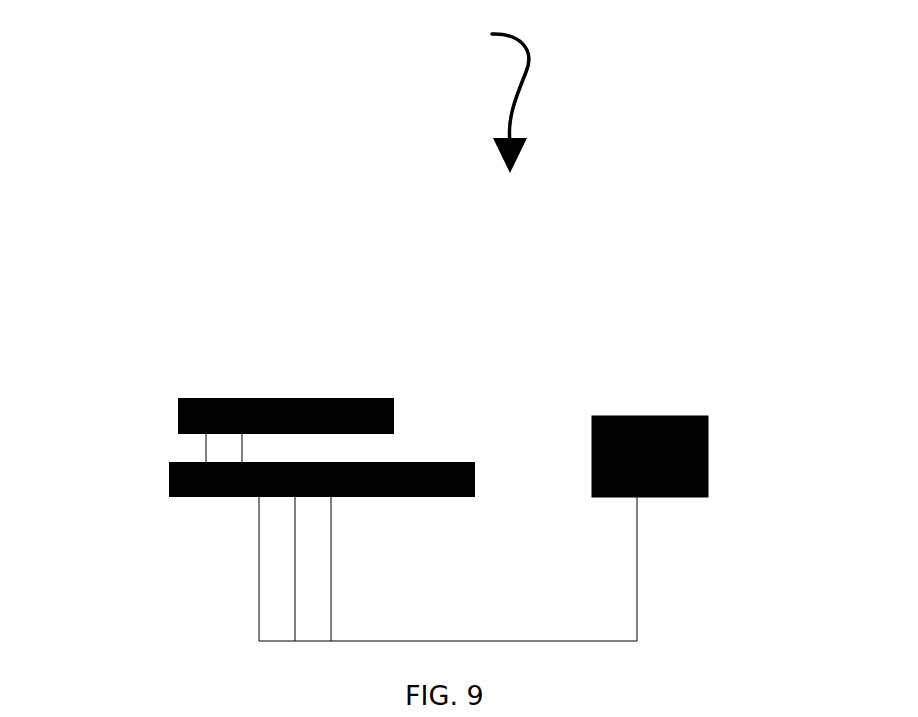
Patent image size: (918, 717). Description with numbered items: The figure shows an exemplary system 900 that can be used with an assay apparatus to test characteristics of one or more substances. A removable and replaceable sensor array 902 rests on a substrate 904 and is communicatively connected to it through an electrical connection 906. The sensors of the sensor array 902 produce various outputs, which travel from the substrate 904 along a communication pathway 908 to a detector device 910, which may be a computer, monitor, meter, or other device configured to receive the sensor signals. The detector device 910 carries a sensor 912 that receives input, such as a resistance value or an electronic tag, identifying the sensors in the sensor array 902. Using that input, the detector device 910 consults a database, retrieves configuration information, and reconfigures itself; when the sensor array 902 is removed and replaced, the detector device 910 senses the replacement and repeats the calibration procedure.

The system 900 is at (483, 96).
The sensor array 902 is at (206, 398).
The substrate 904 is at (447, 462).
The electrical connection 906 is at (206, 443).
The communication pathway 908 is at (259, 586).
The detector device 910 is at (653, 416).
The sensor 912 is at (708, 416).